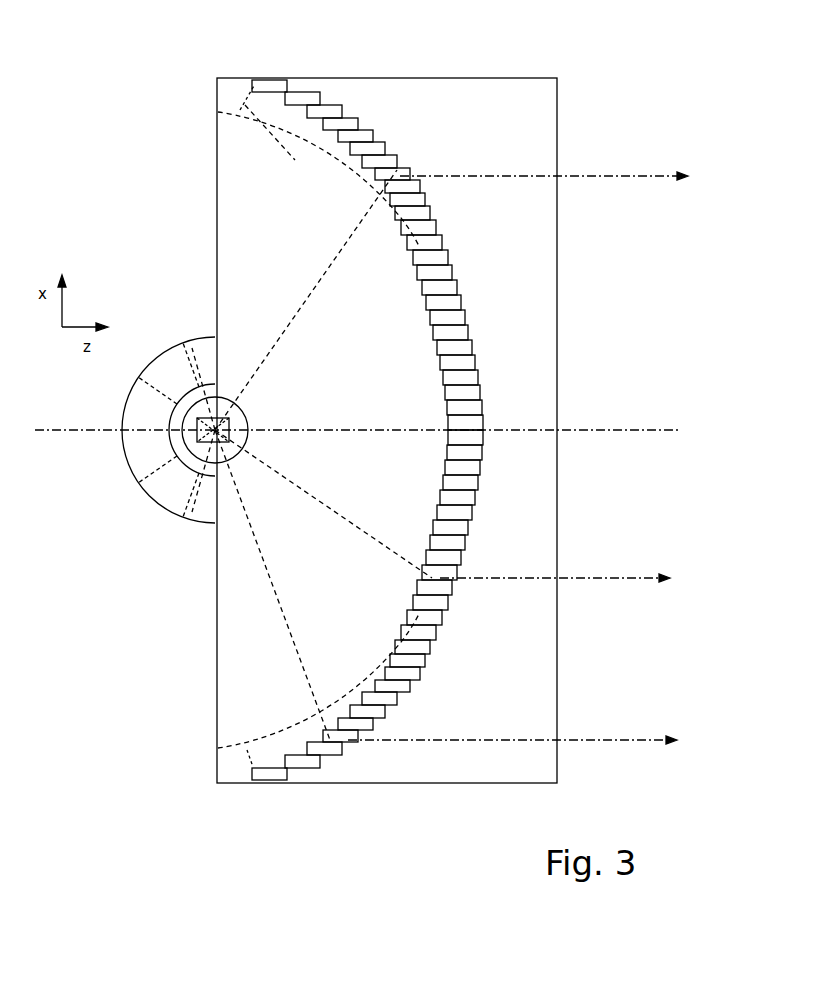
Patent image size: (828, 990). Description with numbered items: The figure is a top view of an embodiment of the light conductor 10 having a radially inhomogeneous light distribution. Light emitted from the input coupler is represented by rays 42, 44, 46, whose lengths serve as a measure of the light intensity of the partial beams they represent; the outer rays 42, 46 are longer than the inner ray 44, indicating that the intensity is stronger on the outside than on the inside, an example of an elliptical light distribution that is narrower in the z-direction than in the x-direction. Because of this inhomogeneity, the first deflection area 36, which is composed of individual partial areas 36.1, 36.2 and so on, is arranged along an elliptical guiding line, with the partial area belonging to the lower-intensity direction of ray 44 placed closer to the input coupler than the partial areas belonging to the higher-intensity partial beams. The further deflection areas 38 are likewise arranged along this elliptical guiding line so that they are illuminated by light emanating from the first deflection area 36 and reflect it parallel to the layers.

The light conductor 10 is at (103, 620).
The first deflection area 36 is at (184, 92).
The partial area of the first deflection area 36.1 is at (236, 114).
The partial area of the first deflection area 36.2 is at (260, 108).
The further deflection areas 38 is at (305, 97).
The ray 42 is at (649, 175).
The ray 44 is at (649, 577).
The ray 46 is at (649, 738).